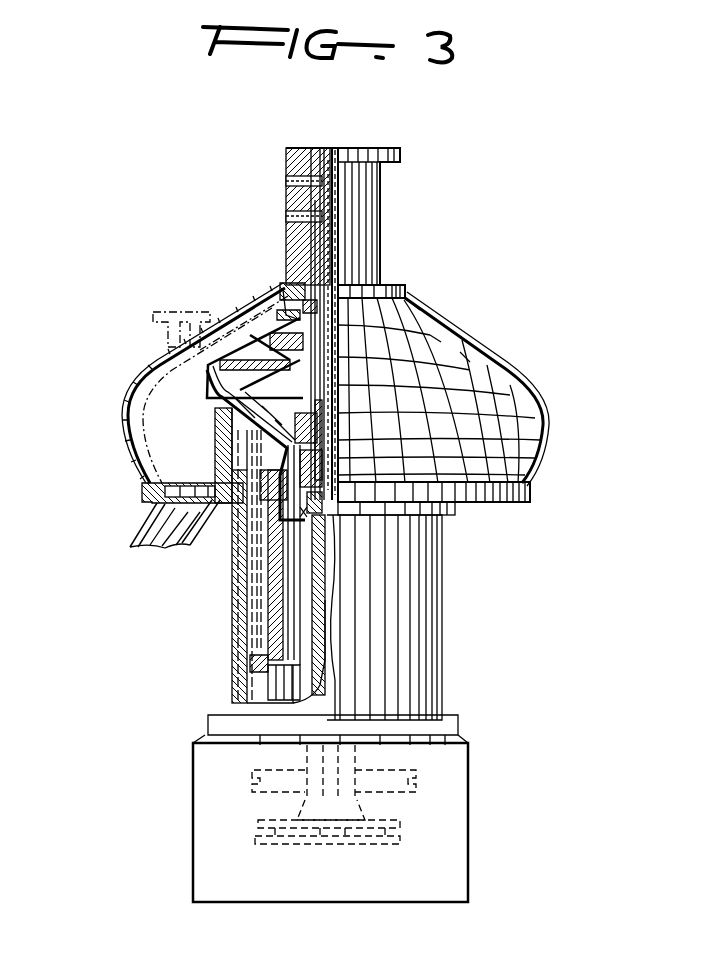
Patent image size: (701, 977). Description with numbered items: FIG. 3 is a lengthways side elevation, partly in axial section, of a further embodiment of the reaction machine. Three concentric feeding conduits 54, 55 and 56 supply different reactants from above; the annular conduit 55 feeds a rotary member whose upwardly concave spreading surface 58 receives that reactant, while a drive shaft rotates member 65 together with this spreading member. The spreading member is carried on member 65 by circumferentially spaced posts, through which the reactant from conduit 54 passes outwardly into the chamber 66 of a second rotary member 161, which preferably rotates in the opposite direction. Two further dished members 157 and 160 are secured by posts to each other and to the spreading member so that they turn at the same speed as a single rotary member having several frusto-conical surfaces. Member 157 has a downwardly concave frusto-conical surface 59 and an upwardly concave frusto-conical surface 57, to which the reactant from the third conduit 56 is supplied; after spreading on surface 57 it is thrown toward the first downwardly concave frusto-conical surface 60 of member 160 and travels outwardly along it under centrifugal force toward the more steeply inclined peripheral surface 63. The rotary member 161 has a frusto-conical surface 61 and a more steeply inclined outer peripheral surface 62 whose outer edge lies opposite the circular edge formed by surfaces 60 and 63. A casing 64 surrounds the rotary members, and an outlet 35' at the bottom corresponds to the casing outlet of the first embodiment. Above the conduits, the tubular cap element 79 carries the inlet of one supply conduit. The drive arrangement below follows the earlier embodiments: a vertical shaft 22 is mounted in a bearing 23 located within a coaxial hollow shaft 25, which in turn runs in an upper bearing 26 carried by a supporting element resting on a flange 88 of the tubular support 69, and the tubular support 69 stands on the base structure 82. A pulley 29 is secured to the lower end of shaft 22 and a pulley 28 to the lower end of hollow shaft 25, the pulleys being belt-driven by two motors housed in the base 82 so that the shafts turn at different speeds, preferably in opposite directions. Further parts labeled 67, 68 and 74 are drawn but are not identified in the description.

The vertical shaft 22 is at (332, 570).
The bearing 23 is at (454, 516).
The hollow shaft 25 is at (314, 602).
The upper bearing 26 is at (438, 543).
The pulley 28 is at (420, 776).
The pulley 29 is at (402, 838).
The outlet pipe 35' is at (175, 538).
The feeding conduit 54 is at (338, 184).
The annular conduit 55 is at (324, 203).
The third conduit 56 is at (314, 227).
The upwardly concave frusto-conical surface 57 is at (396, 293).
The spreading surface 58 is at (441, 342).
The downwardly concave frusto-conical surface 59 is at (470, 362).
The first downwardly concave frusto-conical surface 60 is at (257, 320).
The frusto-conical surface 61 is at (223, 412).
The frusto-conical surface 62 is at (178, 393).
The frusto-conical surface 63 is at (148, 373).
The casing 64 is at (137, 387).
The member 65 is at (518, 462).
The chamber 66 is at (230, 463).
The bracket 67 is at (175, 308).
The inner sleeve 68 is at (275, 600).
The tubular support 69 is at (238, 632).
The casing grid 74 is at (528, 440).
The tubular cap element 79 is at (365, 236).
The base structure 82 is at (205, 802).
The flange 88 is at (256, 670).
The dished member 157 is at (247, 337).
The dished member 160 is at (265, 308).
The second rotary member 161 is at (223, 428).